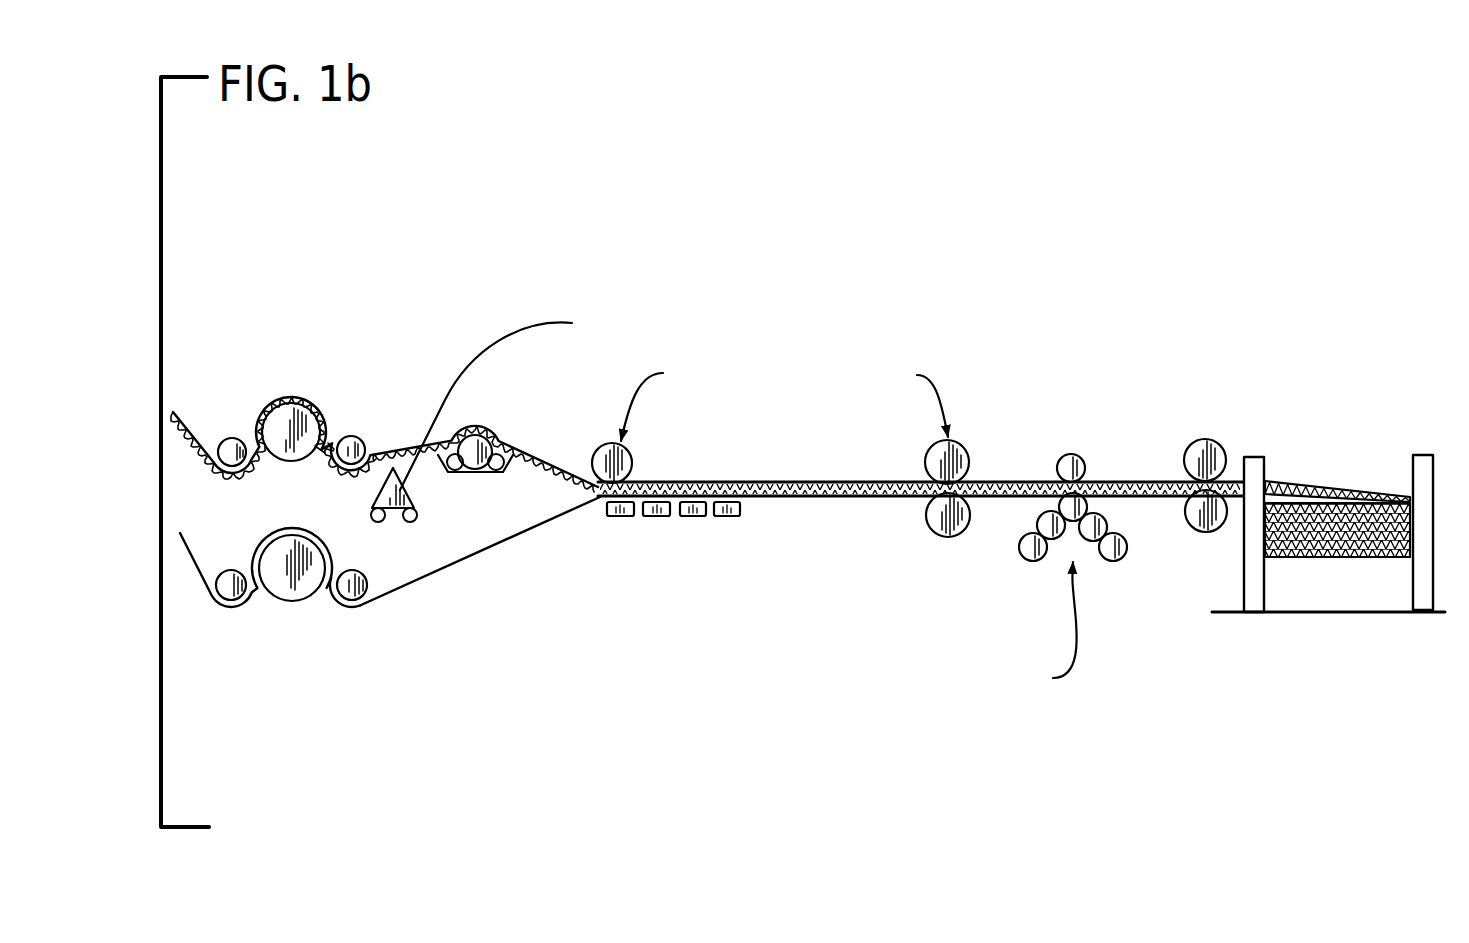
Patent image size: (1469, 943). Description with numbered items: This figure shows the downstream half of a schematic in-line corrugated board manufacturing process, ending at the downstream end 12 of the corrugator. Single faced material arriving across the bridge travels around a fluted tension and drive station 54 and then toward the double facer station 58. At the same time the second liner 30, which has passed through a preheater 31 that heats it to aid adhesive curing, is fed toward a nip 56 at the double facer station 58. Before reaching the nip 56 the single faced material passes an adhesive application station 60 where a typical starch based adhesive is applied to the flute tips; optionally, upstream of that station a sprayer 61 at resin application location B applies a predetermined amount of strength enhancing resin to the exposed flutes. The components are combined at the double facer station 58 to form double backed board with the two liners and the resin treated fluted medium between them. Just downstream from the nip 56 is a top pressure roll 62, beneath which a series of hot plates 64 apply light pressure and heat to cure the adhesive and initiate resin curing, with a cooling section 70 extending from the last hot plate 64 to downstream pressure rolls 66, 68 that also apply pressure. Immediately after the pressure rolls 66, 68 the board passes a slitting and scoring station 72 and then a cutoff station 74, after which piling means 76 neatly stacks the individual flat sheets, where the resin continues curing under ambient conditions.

The downstream end 12 is at (1166, 393).
The second liner 30 is at (453, 566).
The preheater 31 is at (298, 596).
The fluted tension and drive station 54 is at (271, 484).
The nip 56 is at (577, 496).
The double facer station 58 is at (574, 520).
The adhesive application station 60 is at (487, 430).
The sprayer 61 is at (375, 493).
The top pressure roll 62 is at (632, 455).
The hot plates 64 is at (727, 517).
The downstream pressure roll 66 is at (951, 447).
The downstream pressure roll 68 is at (936, 522).
The cooling section 70 is at (810, 465).
The slitting and scoring station 72 is at (1085, 452).
The cutoff station 74 is at (1230, 437).
The piling means 76 is at (1263, 628).